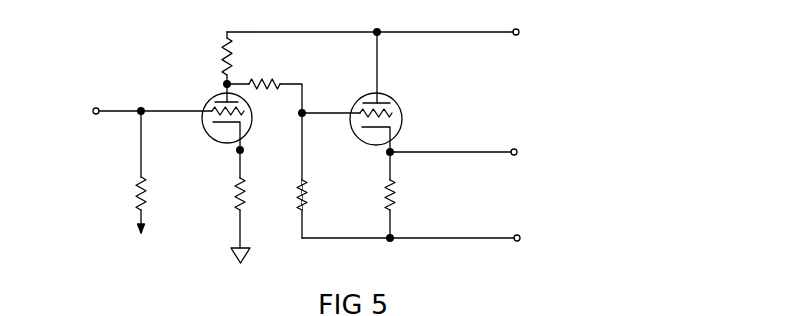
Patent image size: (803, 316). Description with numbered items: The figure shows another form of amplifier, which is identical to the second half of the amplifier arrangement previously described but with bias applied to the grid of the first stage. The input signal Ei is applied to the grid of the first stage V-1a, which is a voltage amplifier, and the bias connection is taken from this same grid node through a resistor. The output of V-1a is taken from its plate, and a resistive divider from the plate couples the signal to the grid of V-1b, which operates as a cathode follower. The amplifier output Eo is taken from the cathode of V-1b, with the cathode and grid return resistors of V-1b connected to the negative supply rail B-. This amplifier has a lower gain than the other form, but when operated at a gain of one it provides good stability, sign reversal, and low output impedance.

The voltage amplifier V-1a is at (210, 114).
The cathode follower V-1b is at (352, 92).
The negative supply terminal B- is at (411, 248).
The input voltage terminal (-Ei) Ei is at (129, 111).
The output voltage terminal (+Eo) Eo is at (472, 155).
The element bias is at (145, 186).